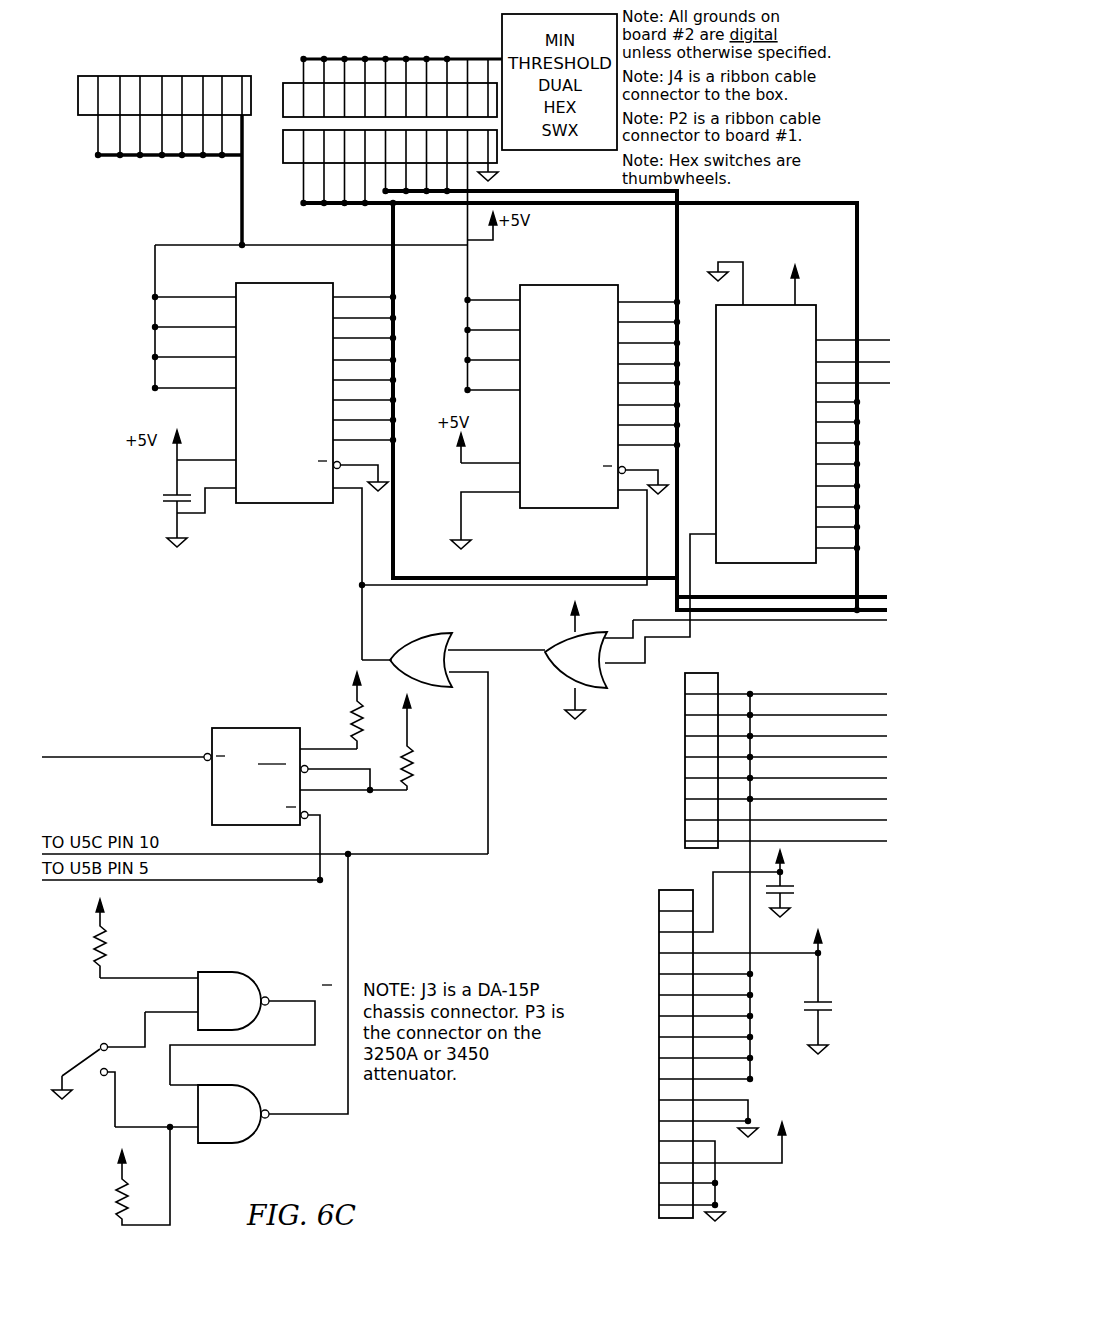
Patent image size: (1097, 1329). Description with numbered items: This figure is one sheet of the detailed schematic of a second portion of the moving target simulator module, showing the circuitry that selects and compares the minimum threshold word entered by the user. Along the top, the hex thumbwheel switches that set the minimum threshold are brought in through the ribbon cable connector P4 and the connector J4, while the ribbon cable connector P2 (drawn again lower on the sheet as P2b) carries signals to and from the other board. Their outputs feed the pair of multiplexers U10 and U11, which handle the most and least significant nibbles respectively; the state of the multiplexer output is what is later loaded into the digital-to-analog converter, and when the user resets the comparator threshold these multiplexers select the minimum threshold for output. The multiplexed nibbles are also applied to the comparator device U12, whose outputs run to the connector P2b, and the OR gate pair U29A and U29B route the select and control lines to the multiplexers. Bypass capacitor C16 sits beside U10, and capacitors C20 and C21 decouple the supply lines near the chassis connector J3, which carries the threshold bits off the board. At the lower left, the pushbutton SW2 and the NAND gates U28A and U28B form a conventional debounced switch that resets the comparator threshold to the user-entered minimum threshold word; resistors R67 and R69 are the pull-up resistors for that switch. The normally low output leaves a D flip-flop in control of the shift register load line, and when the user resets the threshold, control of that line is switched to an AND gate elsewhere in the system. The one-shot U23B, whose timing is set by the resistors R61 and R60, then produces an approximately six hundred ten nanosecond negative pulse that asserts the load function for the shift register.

The ribbon cable connector P2 is at (149, 162).
The ribbon cable connector P2 (right) P2b is at (786, 865).
The connector P4 is at (378, 77).
The ribbon cable connector J4 is at (376, 187).
The DA-15P chassis connector J3 is at (727, 1045).
The multiplexer U10 is at (264, 452).
The multiplexer U11 is at (521, 415).
The LS85 comparator U12 is at (747, 459).
The LS32 OR gate U29A is at (568, 659).
The LS32 OR gate U29B is at (453, 736).
The 1-shot U23B is at (224, 795).
The debounced switch U28A is at (217, 1017).
The debounced switch U28B is at (231, 998).
The resistor R61 30K R61 is at (354, 708).
The resistor R60 5K R60 is at (403, 741).
The pull-up resistor R69 is at (95, 937).
The pull-up resistor R67 is at (121, 1176).
The capacitor C16 .1 C16 is at (162, 503).
The capacitor C20 .1 C20 is at (794, 881).
The capacitor C21 .1 C21 is at (814, 992).
The switch SW2 is at (97, 1069).